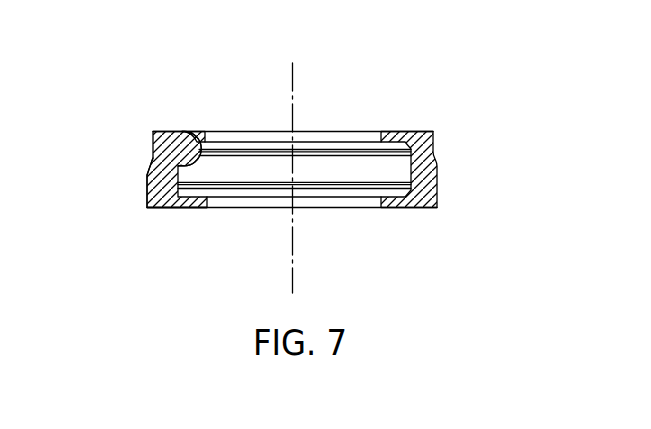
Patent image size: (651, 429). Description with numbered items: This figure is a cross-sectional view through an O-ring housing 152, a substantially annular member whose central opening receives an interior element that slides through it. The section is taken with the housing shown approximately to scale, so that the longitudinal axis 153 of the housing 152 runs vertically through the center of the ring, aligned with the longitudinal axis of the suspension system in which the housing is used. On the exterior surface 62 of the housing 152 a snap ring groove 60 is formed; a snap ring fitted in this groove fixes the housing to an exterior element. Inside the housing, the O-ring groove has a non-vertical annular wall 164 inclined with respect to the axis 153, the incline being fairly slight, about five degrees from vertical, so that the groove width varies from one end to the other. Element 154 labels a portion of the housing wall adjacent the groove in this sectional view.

The snap ring groove 60 is at (153, 150).
The exterior surface 62 is at (148, 195).
The O-ring housing 152 is at (305, 180).
The longitudinal axis 153 is at (300, 240).
The annular side wall 154 is at (397, 165).
The annular wall 164 is at (190, 137).